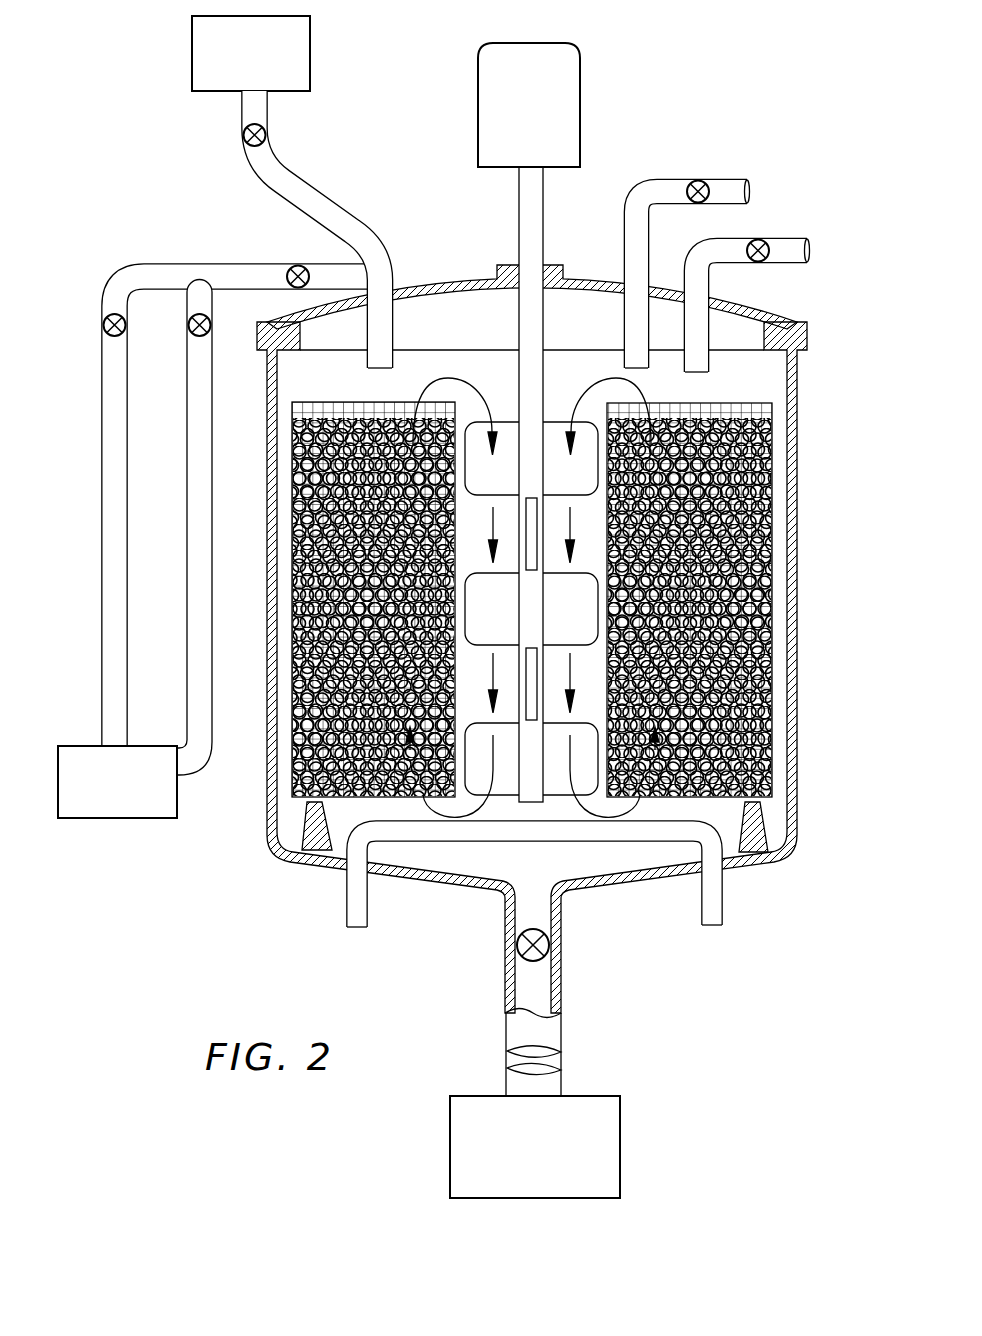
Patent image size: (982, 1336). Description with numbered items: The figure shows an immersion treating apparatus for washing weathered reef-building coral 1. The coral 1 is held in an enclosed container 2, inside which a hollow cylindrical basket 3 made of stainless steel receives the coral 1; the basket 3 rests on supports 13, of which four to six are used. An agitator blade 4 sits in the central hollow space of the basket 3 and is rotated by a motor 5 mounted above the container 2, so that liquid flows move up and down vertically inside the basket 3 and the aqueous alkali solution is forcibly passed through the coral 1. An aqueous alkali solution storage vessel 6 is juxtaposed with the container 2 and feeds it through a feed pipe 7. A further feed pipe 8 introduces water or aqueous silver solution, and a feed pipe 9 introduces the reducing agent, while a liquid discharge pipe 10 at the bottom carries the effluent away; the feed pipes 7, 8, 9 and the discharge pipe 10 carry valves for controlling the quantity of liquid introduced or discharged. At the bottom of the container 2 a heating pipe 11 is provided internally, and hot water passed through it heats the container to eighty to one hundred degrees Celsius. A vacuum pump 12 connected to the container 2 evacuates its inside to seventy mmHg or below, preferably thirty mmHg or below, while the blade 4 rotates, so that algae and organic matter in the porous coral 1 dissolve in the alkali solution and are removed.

The weathered reef-building coral 1 is at (765, 487).
The enclosed container 2 is at (797, 591).
The hollow cylindrical basket 3 is at (753, 407).
The agitator blade 4 is at (509, 428).
The motor 5 is at (520, 114).
The aqueous alkali solution storage vessel 6 is at (242, 70).
The feed pipe 7 is at (288, 192).
The feed pipe 8 is at (675, 185).
The feed pipe 9 is at (788, 240).
The liquid discharge pipe 10 is at (558, 987).
The heating pipe 11 is at (717, 907).
The vacuum pump 12 is at (100, 797).
The supports 13 is at (765, 822).